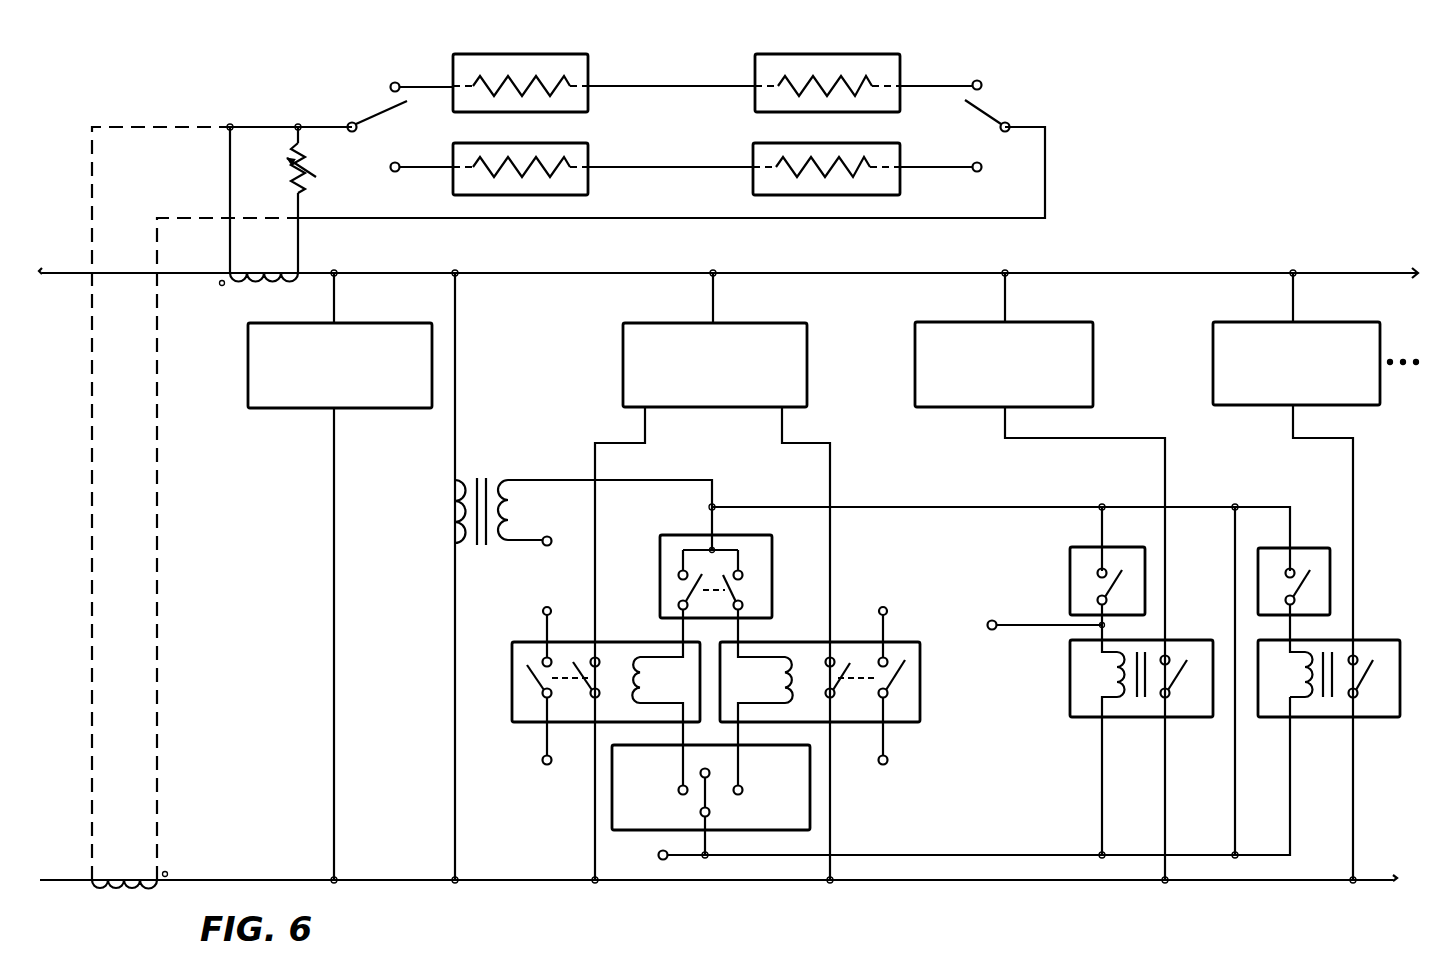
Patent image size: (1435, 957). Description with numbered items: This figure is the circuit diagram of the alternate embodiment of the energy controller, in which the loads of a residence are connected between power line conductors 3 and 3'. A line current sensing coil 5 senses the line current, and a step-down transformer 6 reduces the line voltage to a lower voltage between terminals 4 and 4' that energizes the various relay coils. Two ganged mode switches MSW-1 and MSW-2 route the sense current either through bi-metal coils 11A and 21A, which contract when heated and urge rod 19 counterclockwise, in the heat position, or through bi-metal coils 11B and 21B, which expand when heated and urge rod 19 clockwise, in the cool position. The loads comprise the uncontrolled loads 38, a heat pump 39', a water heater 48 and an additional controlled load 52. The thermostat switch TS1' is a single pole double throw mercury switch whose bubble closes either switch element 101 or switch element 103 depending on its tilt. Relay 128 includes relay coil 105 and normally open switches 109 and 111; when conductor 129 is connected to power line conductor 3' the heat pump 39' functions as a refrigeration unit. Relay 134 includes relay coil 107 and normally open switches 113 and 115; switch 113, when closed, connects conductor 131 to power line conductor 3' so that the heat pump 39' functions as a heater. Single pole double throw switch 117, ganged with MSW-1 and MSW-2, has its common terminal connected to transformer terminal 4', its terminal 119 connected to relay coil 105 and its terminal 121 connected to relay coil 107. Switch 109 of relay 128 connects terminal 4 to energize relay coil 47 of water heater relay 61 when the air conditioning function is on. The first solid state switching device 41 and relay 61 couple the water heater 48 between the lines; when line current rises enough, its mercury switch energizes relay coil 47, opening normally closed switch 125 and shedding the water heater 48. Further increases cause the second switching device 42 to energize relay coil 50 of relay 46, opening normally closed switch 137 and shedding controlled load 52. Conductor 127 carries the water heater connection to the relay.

The power line conductor 3 is at (728, 260).
The power line conductor 3' is at (718, 895).
The step-down transformer terminal 4 is at (899, 651).
The step-down transformer terminal 4' is at (899, 702).
The line current sensing coil 5 is at (259, 283).
The step-down transformer 6 is at (454, 491).
The bi-metal coil 11A is at (547, 54).
The bi-metal coil 11B is at (545, 143).
The bi-metal coil 21A is at (848, 54).
The bi-metal coil 21B is at (840, 143).
The conductive rod 19 is at (675, 154).
The uncontrolled loads 38 is at (395, 323).
The heat pump 39' is at (715, 340).
The water heater 48 is at (1060, 322).
The controlled load 52 is at (1345, 322).
The switch SS1' 41 is at (1068, 540).
The switch SS2' 42 is at (1310, 542).
The relay 46 is at (1398, 720).
The relay coil 47 is at (1102, 700).
The relay coil 50 is at (1290, 700).
The water heater control relay 61 is at (1148, 720).
The switch element 101 is at (690, 588).
The switch element 103 is at (740, 589).
The relay coil 105 is at (636, 658).
The relay coil 107 is at (789, 658).
The switch 109 is at (512, 672).
The switch 111 is at (598, 697).
The switch 113 is at (828, 697).
The switch 115 is at (920, 665).
The single pole double throw switch 117 is at (798, 837).
The terminal 119 is at (678, 787).
The terminal 121 is at (741, 786).
The normally closed switch 125 is at (1186, 656).
The water heater conductor 127 is at (1168, 597).
The relay 128 is at (512, 690).
The conductor 129 is at (597, 565).
The conductor 131 is at (832, 472).
The relay 134 is at (923, 690).
The normally closed switch 137 is at (1373, 656).
The mode switch MSW-1 is at (368, 103).
The mode switch MSW-2 is at (1013, 108).
The thermostat switch TS1' is at (694, 552).